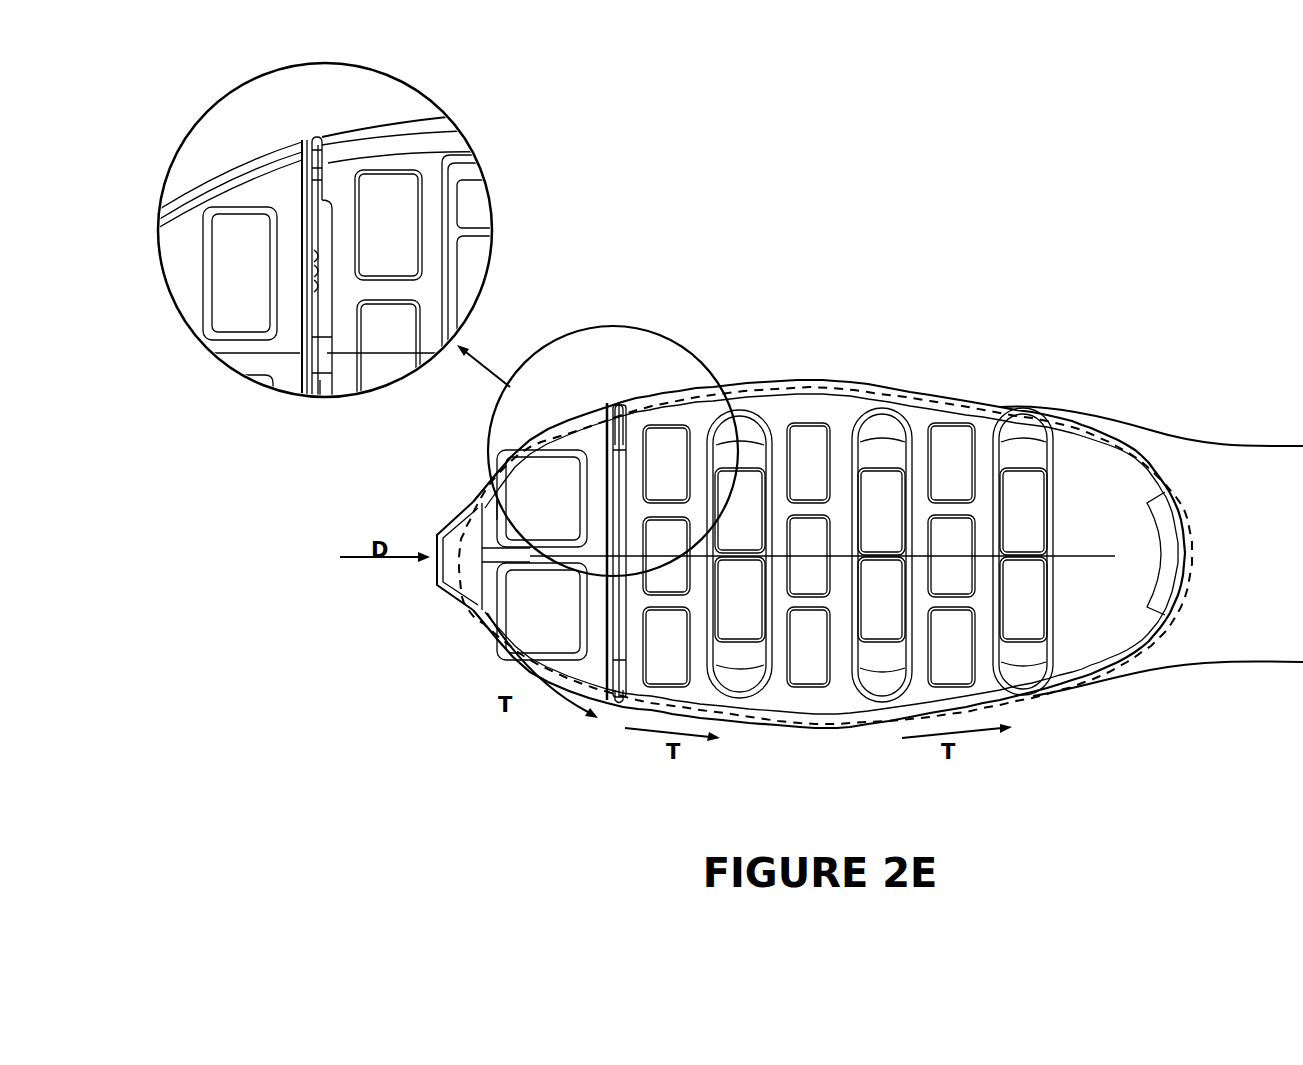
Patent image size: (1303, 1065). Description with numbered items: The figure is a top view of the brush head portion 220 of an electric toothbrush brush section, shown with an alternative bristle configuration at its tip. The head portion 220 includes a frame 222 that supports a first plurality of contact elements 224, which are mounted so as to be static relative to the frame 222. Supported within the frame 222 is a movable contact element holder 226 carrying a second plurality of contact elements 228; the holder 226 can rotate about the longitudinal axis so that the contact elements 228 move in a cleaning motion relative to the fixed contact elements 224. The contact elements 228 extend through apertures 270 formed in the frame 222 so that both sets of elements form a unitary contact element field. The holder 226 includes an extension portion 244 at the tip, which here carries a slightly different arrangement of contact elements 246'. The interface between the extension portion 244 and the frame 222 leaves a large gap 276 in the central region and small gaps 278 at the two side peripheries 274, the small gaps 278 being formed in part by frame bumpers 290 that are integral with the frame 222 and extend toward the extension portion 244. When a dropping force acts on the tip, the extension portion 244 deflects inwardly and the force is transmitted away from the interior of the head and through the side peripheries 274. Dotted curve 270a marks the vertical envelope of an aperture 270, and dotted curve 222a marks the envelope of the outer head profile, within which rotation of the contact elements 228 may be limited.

The brush head portion 220 is at (862, 238).
The frame 222 is at (1078, 640).
The dotted curve 222a is at (1172, 488).
The first plurality of contact elements 224 is at (665, 442).
The movable contact element holder 226 is at (1166, 490).
The second plurality of contact elements 228 is at (727, 483).
The extension portion 244 is at (583, 440).
The contact elements 246' is at (445, 630).
The apertures 270 is at (758, 690).
The dotted curve 270a is at (748, 702).
The side peripheries 274 is at (925, 415).
The large gap 276 is at (320, 380).
The small gaps 278 is at (632, 690).
The frame bumpers 290 is at (620, 695).